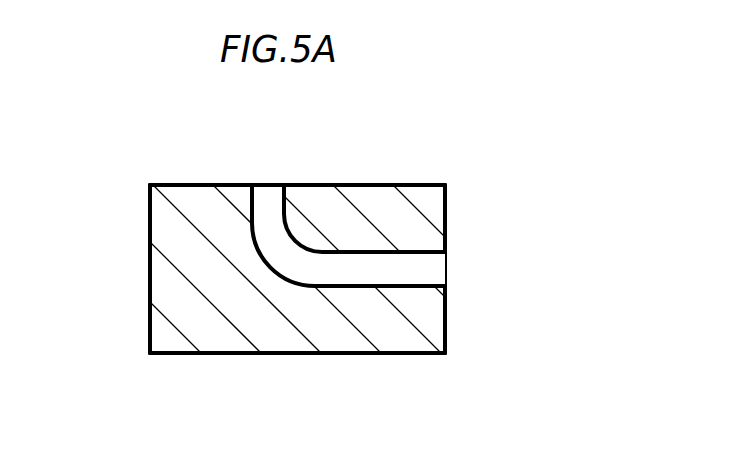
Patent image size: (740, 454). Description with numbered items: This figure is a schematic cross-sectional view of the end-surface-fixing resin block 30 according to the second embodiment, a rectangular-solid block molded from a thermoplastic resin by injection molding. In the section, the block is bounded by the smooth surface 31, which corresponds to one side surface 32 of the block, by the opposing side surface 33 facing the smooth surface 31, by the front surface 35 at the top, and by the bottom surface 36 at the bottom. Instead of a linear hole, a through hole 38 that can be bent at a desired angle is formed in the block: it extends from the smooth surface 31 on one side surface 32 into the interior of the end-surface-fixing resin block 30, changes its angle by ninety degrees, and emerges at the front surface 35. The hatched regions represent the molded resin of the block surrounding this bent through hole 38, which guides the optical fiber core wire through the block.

The end-surface-fixing resin block 30 is at (383, 210).
The smooth surface 31 is at (445, 230).
The side surface 32 is at (445, 313).
The opposing side surface 33 is at (150, 232).
The front surface 35 is at (198, 185).
The bottom surface 36 is at (232, 353).
The through hole 38 is at (375, 263).